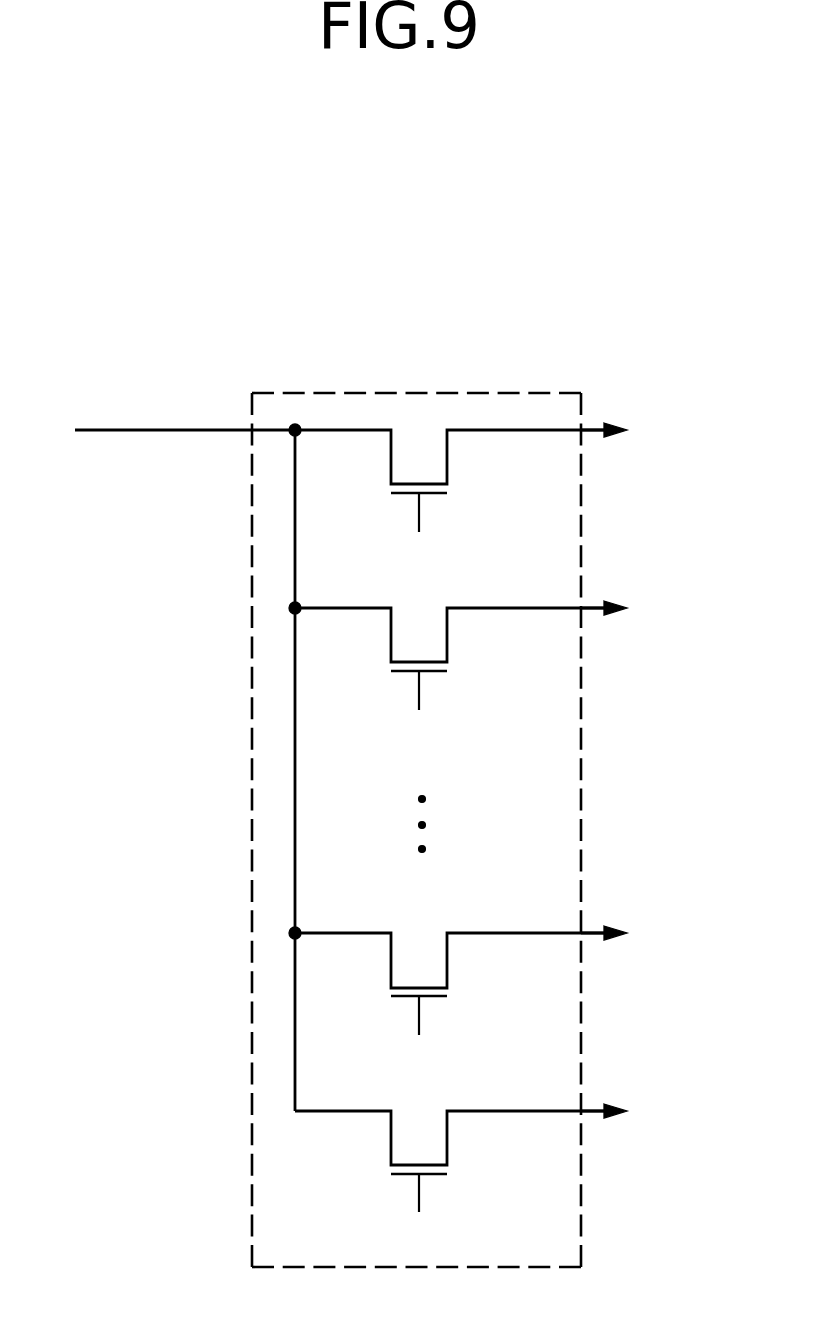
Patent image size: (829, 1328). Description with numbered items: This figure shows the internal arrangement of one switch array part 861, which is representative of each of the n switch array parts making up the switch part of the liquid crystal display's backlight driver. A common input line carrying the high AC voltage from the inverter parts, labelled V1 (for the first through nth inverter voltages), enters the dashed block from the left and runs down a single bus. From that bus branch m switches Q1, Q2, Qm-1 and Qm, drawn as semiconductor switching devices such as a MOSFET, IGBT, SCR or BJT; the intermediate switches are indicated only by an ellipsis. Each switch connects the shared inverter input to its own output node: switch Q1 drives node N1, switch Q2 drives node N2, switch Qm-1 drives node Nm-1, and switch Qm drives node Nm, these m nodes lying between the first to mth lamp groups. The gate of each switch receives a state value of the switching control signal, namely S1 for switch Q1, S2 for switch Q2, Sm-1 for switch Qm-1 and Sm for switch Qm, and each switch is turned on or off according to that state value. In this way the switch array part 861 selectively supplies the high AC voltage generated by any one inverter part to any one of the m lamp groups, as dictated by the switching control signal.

The switch array part 861 is at (575, 367).
The input voltages V1 to Vn V1 is at (188, 750).
The switch Q1 is at (450, 461).
The switch Q2 is at (450, 639).
The switch Qm-1 is at (450, 964).
The switch Qm is at (450, 1142).
The state value S1 is at (418, 531).
The state value S2 is at (418, 710).
The state value Sm-1 is at (441, 1033).
The state value Sm is at (423, 1212).
The node N1 is at (628, 430).
The node N2 is at (628, 608).
The node Nm-1 is at (651, 934).
The node Nm is at (633, 1111).